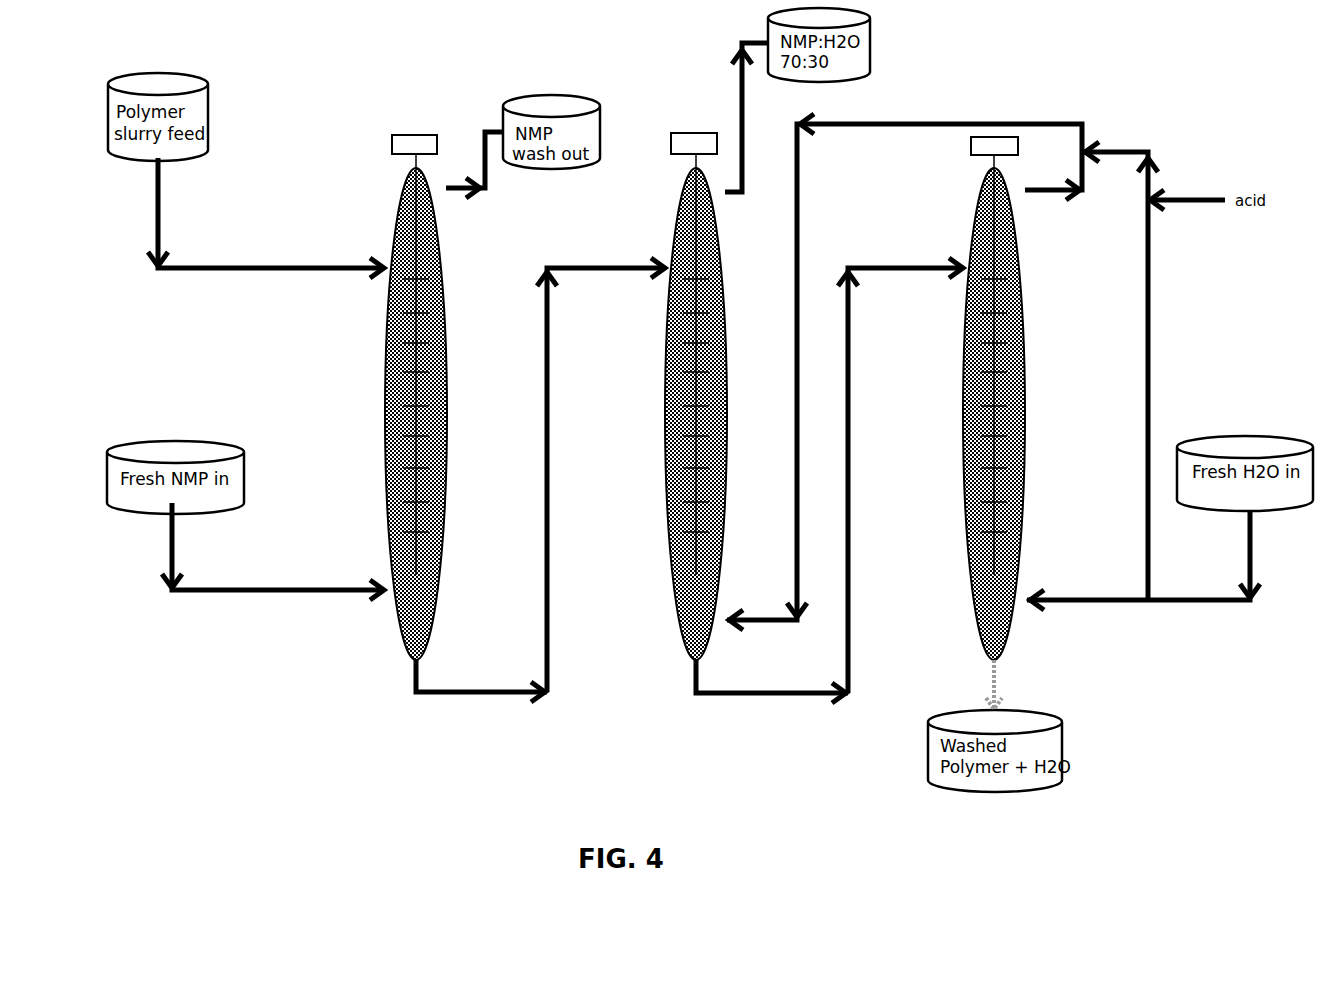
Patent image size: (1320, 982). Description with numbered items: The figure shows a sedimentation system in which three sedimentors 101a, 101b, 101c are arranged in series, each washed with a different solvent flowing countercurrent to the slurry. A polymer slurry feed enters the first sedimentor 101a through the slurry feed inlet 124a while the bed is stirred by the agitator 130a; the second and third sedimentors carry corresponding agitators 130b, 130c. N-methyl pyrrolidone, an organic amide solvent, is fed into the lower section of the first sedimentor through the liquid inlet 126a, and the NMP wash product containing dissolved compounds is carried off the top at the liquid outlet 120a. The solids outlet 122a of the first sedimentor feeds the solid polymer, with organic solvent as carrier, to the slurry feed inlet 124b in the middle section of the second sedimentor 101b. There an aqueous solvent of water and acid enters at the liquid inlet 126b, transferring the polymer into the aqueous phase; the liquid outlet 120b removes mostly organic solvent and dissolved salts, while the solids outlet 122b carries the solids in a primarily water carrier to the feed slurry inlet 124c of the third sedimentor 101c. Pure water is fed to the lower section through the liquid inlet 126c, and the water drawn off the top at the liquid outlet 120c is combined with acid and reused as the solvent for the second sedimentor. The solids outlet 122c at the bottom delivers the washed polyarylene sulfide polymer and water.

The first sedimentor 101a is at (370, 185).
The second sedimentor 101b is at (665, 183).
The third sedimentor 101c is at (968, 183).
The agitator 130a is at (412, 134).
The agitator 130b is at (690, 133).
The agitator 130c is at (1018, 146).
The slurry feed inlet 124a is at (383, 268).
The slurry feed inlet 124b is at (665, 268).
The feed slurry inlet 124c is at (962, 268).
The liquid inlet 126a is at (382, 595).
The liquid inlet 126b is at (727, 625).
The liquid inlet 126c is at (1030, 610).
The liquid outlet 120a is at (440, 190).
The liquid outlet 120b is at (715, 193).
The liquid outlet 120c is at (1025, 200).
The solids outlet 122a is at (412, 663).
The solids outlet 122b is at (692, 662).
The solids outlet 122c is at (992, 663).